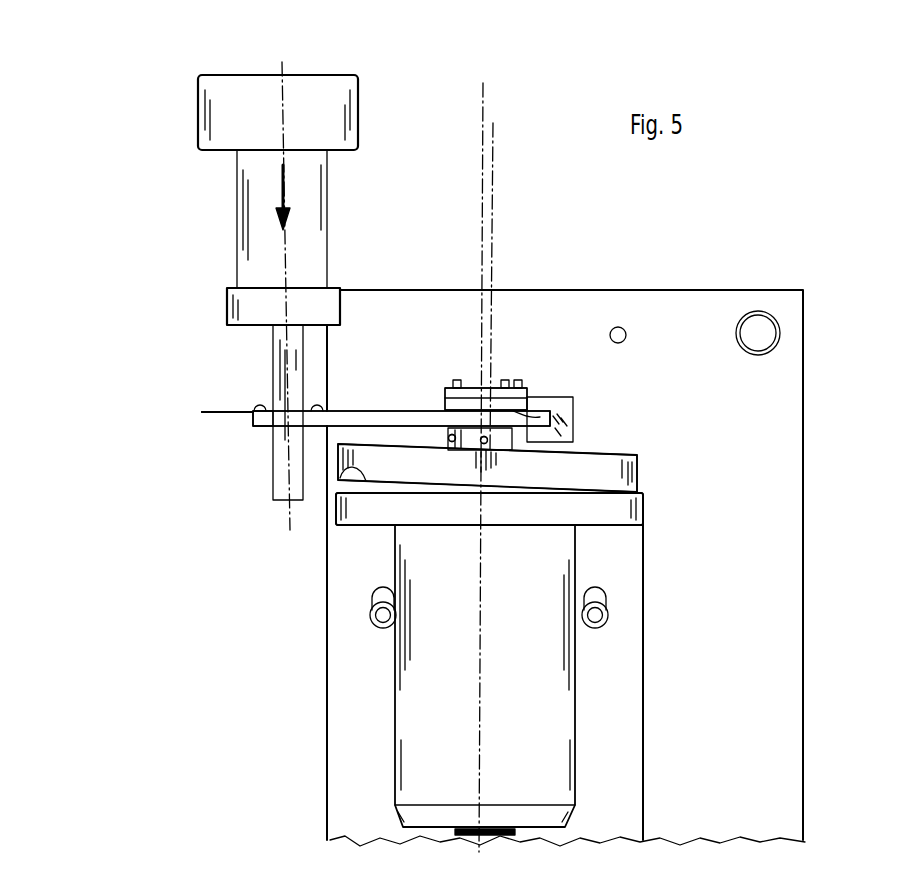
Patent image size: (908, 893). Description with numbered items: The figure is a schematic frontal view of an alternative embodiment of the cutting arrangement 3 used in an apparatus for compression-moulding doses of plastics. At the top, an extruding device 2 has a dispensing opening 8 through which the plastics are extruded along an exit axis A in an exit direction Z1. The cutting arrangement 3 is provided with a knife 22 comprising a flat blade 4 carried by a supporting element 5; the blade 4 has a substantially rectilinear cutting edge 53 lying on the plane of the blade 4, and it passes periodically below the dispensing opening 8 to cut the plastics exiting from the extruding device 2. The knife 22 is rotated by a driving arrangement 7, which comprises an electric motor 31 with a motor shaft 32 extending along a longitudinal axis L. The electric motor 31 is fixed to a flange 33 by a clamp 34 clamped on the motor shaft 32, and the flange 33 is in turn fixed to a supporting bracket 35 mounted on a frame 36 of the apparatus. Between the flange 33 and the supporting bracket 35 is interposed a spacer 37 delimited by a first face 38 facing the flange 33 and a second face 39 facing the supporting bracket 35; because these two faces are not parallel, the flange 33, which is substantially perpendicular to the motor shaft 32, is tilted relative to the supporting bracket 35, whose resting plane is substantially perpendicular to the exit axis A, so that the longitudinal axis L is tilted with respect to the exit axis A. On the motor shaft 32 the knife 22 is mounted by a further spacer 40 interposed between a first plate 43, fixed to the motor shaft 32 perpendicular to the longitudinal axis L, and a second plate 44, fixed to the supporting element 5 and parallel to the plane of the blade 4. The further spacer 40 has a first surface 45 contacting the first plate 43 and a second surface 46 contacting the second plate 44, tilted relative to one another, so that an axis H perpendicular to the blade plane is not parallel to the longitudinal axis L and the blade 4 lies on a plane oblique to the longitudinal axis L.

The extruding device 2 is at (258, 188).
The cutting arrangement 3 is at (152, 412).
The blade 4 is at (220, 420).
The supporting element 5 is at (399, 410).
The driving arrangement 7 is at (600, 698).
The dispensing opening 8 is at (270, 327).
The knife 22 is at (252, 426).
The electric motor 31 is at (408, 704).
The motor shaft 32 is at (513, 440).
The flange 33 is at (605, 475).
The clamp 34 is at (450, 437).
The supporting bracket 35 is at (612, 510).
The frame 36 is at (773, 592).
The spacer 37 is at (373, 490).
The first face 38 is at (338, 468).
The second face 39 is at (567, 492).
The further spacer 40 is at (446, 398).
The first plate 43 is at (522, 388).
The second plate 44 is at (548, 402).
The first surface 45 is at (505, 380).
The second surface 46 is at (485, 446).
The cutting edge 53 is at (205, 411).
The exit axis A is at (284, 72).
The axis perpendicular to blade plane H is at (482, 137).
The longitudinal axis L is at (494, 161).
The exit direction Z1 is at (286, 188).